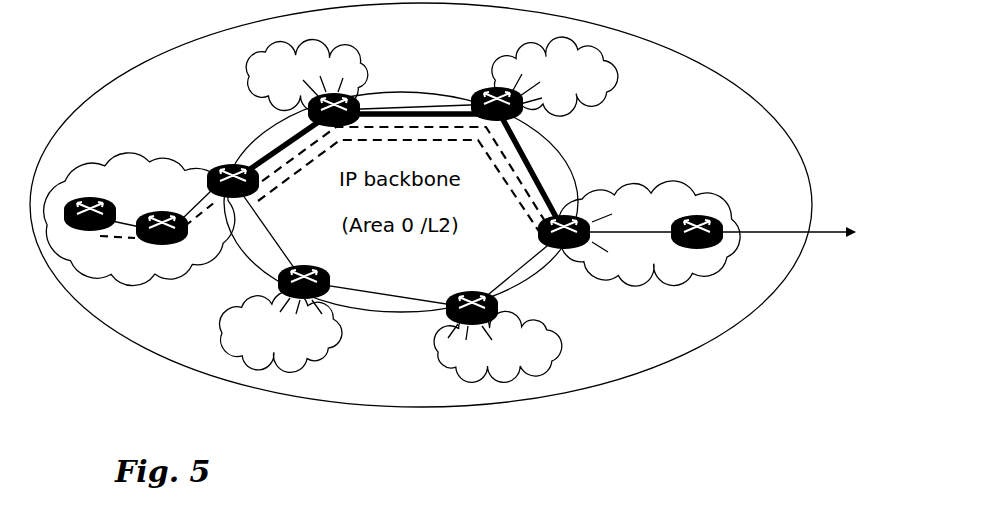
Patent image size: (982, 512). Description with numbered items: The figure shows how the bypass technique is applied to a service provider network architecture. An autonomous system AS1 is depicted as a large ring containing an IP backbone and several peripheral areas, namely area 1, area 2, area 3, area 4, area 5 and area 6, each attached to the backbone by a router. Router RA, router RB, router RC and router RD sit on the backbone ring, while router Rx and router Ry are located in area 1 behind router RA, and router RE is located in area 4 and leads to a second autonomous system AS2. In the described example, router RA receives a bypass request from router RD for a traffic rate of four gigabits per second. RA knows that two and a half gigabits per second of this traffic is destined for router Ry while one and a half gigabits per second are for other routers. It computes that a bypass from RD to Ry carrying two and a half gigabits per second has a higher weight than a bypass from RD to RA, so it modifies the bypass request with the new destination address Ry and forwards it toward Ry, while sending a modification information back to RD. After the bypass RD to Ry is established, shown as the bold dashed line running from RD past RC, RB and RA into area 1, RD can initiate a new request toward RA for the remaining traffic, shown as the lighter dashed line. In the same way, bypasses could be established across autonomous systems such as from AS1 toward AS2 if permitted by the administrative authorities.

The autonomous system 1 AS1 is at (421, 205).
The autonomous system 2 AS2 is at (722, 254).
The Area 1 is at (139, 219).
The Area 2 is at (307, 75).
The Area 3 is at (555, 76).
The Area 4 is at (649, 233).
The Area 5 is at (498, 346).
The Area 6 is at (280, 331).
The router A RA is at (233, 172).
The router B RB is at (343, 100).
The router C RC is at (496, 96).
The router RD is at (548, 232).
The router E RE is at (697, 244).
The router x Rx is at (162, 243).
The router RY Ry is at (90, 228).